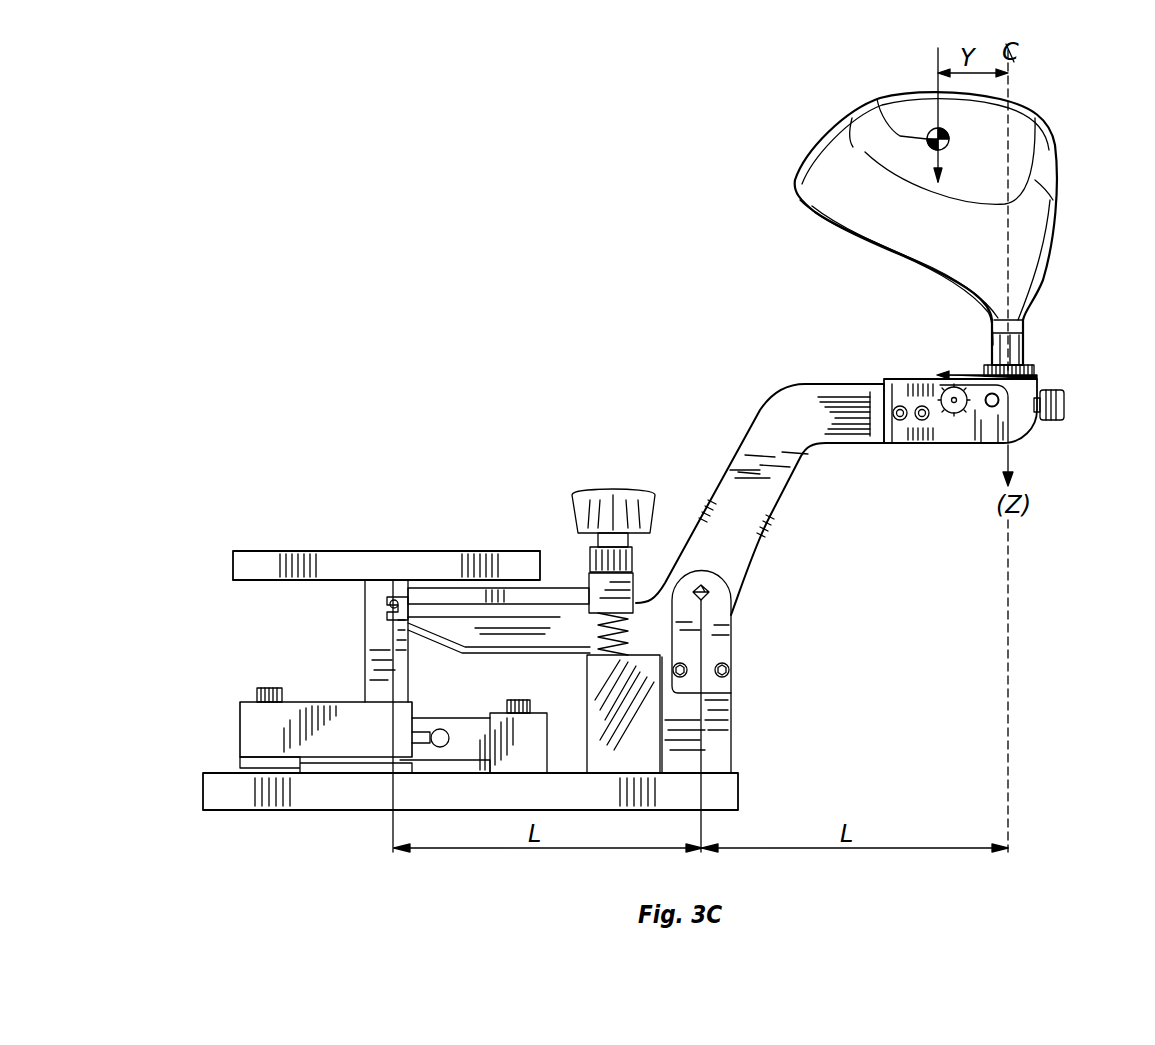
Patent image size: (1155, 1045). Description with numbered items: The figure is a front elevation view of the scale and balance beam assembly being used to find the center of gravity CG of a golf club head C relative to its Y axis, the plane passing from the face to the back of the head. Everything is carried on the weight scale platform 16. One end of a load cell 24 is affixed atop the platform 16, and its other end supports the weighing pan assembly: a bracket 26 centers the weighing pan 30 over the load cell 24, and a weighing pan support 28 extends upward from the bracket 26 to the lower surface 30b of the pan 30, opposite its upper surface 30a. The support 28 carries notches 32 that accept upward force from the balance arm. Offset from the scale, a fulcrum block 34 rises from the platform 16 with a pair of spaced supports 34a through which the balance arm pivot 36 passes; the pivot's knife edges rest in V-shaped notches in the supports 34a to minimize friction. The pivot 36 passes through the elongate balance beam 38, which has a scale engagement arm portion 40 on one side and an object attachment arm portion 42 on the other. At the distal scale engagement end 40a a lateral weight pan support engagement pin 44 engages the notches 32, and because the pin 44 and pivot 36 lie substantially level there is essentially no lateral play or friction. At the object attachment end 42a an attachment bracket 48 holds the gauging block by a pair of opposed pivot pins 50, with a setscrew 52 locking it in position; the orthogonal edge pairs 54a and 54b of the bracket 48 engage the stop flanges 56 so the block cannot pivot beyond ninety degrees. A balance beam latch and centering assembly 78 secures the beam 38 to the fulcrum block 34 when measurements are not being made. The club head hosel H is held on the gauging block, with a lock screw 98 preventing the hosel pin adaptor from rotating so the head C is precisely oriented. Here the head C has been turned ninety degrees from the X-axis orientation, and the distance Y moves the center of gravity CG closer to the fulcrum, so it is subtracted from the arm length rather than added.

The club head C is at (795, 178).
The center of gravity CG is at (880, 99).
The hosel H is at (1030, 352).
The weight scale platform 16 is at (322, 812).
The load cell 24 is at (432, 774).
The bracket 26 is at (240, 726).
The weighing pan support 28 is at (365, 683).
The weighing pan 30 is at (233, 565).
The upper surface 30a is at (388, 550).
The lower surface 30b is at (262, 582).
The notches 32 is at (385, 606).
The fulcrum block 34 is at (736, 735).
The fulcrum supports 34a is at (735, 645).
The balance arm pivot 36 is at (714, 590).
The balance beam 38 is at (712, 486).
The scale engagement arm portion 40 is at (547, 660).
The distal scale engagement end 40a is at (430, 638).
The object attachment arm portion 42 is at (786, 392).
The object attachment end 42a is at (845, 382).
The weight pan support engagement pin 44 is at (402, 600).
The attachment bracket 48 is at (900, 446).
The pivot pins 50 is at (992, 408).
The setscrew 52 is at (945, 418).
The edge pair 54a is at (905, 382).
The edge pair 54b is at (1012, 405).
The stop flanges 56 is at (965, 374).
The balance beam latch and centering assembly 78 is at (596, 432).
The lock screw 98 is at (1065, 408).